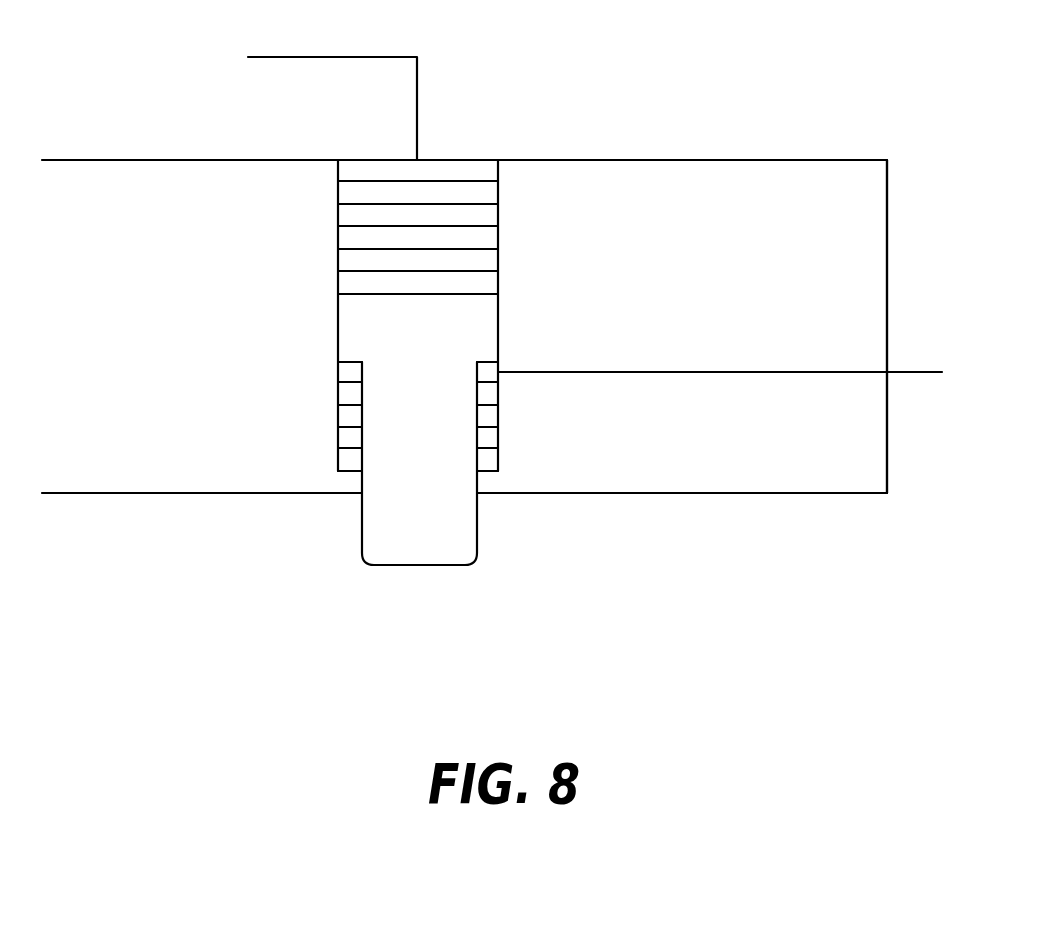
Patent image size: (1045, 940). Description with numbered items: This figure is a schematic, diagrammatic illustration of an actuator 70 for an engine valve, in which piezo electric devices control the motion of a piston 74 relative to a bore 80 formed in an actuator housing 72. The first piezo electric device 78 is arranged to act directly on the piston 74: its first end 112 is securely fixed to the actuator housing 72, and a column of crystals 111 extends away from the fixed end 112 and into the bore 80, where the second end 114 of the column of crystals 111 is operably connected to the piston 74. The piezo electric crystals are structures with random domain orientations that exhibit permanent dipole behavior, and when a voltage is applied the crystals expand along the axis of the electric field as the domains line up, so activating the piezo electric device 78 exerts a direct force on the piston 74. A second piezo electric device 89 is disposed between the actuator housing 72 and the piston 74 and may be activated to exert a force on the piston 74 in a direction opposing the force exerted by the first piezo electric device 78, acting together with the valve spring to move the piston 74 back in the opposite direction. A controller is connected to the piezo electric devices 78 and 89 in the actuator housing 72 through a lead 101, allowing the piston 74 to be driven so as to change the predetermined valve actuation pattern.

The actuator 70 is at (629, 570).
The actuator housing 72 is at (226, 493).
The piston 74 is at (437, 537).
The piezo electric device 78 is at (512, 264).
The bore 80 is at (493, 511).
The second piezo electric device 89 is at (510, 450).
The lead 101 is at (417, 104).
The column of crystals 111 is at (468, 238).
The first end 112 is at (360, 160).
The second end 114 is at (352, 294).